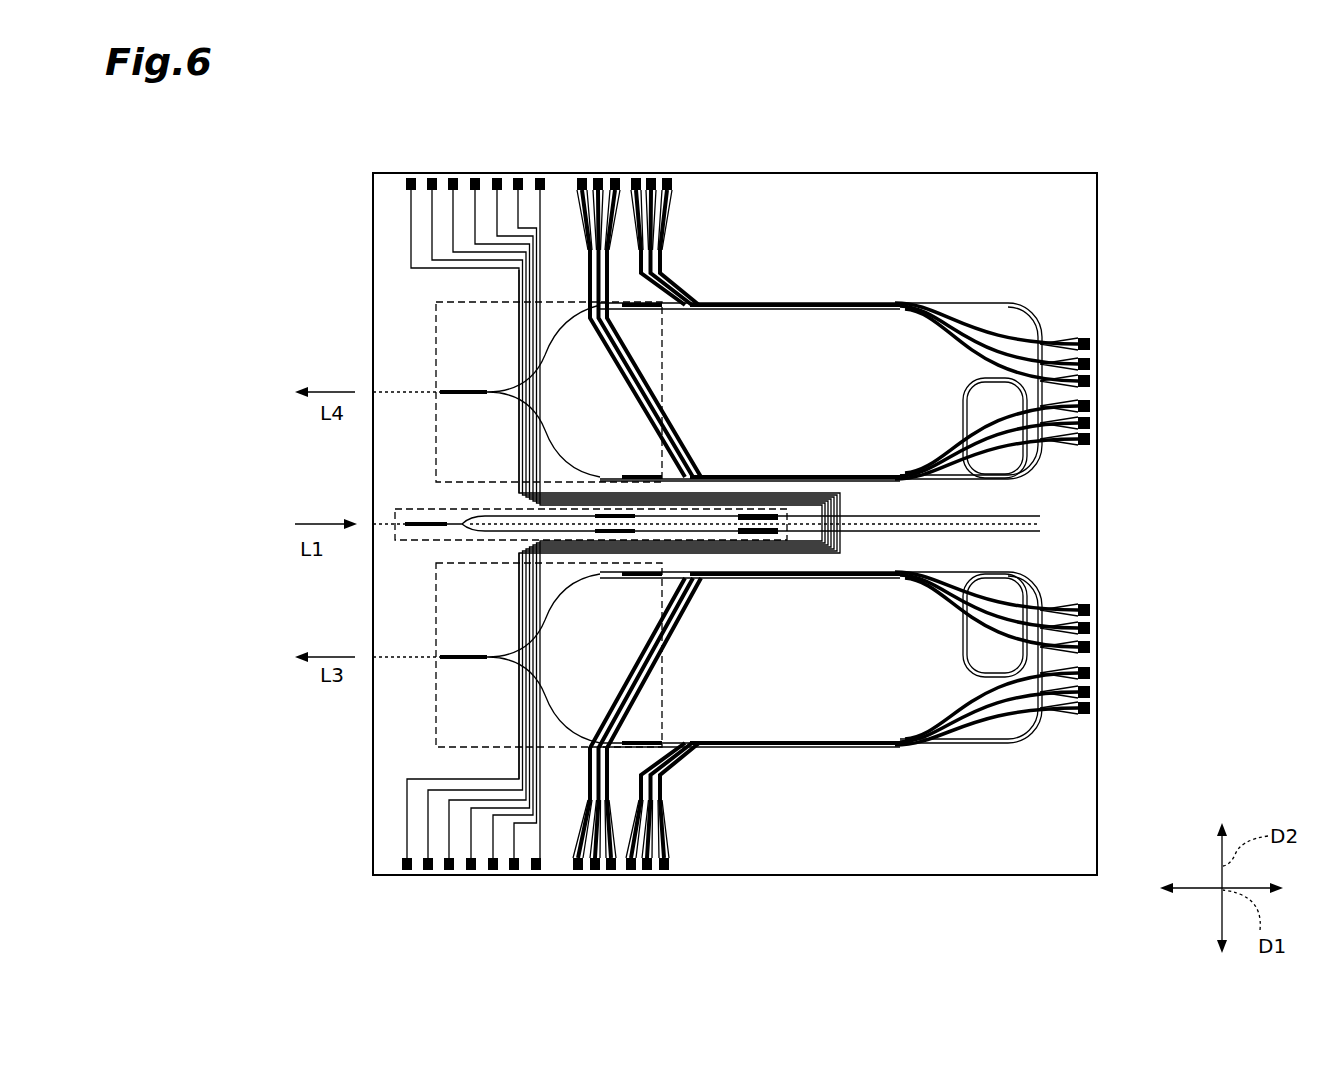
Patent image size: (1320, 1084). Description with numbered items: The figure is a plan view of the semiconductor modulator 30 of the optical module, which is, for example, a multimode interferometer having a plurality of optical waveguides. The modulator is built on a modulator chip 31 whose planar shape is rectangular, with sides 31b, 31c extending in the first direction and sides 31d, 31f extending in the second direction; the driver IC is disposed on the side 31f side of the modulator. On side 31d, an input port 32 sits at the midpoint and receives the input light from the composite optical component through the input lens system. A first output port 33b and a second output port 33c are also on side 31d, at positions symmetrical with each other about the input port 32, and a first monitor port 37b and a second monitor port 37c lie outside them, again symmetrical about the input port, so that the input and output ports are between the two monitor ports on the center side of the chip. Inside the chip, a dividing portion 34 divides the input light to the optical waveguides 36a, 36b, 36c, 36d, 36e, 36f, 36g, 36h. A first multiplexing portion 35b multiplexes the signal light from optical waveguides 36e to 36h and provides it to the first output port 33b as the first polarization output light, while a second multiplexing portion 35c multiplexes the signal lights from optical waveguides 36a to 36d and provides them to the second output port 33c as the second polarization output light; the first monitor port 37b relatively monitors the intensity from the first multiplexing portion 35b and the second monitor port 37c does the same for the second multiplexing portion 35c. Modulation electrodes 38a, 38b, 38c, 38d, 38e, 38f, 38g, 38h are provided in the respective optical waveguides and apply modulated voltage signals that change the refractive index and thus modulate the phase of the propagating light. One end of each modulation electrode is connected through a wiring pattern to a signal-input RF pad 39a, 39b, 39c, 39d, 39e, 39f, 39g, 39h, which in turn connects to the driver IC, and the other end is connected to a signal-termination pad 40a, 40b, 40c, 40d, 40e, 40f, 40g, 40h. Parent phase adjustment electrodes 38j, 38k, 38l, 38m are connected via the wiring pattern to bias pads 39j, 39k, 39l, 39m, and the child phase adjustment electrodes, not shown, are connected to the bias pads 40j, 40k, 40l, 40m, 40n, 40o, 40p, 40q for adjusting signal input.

The modulator 30 is at (996, 140).
The modulator chip 31 is at (846, 170).
The side 31b is at (763, 172).
The side 31c is at (750, 877).
The side 31d is at (372, 826).
The side 31f is at (1098, 826).
The input port 32 is at (373, 522).
The first output port 33b is at (373, 390).
The second output port 33c is at (373, 655).
The dividing portion 34 is at (410, 507).
The first multiplexing portion 35b is at (556, 300).
The second multiplexing portion 35c is at (556, 748).
The optical waveguide 36a is at (958, 748).
The optical waveguide 36b is at (1045, 735).
The optical waveguide 36c is at (963, 645).
The optical waveguide 36d is at (950, 578).
The optical waveguide 36e is at (1045, 470).
The optical waveguide 36f is at (1003, 480).
The optical waveguide 36g is at (963, 400).
The optical waveguide 36h is at (935, 483).
The first monitor port 37b is at (436, 392).
The second monitor port 37c is at (436, 657).
The modulation electrode 38a is at (832, 302).
The modulation electrode 38b is at (808, 311).
The modulation electrode 38c is at (795, 474).
The modulation electrode 38d is at (850, 483).
The modulation electrode 38e is at (850, 572).
The modulation electrode 38f is at (830, 580).
The modulation electrode 38g is at (822, 740).
The modulation electrode 38h is at (805, 749).
The parent phase adjustment electrode 38j is at (707, 514).
The parent phase adjustment electrode 38k is at (720, 522).
The parent phase adjustment electrode 38l is at (715, 533).
The parent phase adjustment electrode 38m is at (740, 535).
The RF pad 39a is at (1092, 344).
The RF pad 39b is at (1092, 381).
The RF pad 39c is at (1092, 406).
The RF pad 39d is at (1092, 439).
The RF pad 39e is at (1092, 610).
The RF pad 39f is at (1092, 647).
The RF pad 39g is at (1092, 673).
The RF pad 39h is at (1092, 708).
The bias pad 39j is at (432, 176).
The bias pad 39k is at (453, 176).
The bias pad 39l is at (423, 872).
The bias pad 39m is at (448, 872).
The signal pad 40a is at (667, 176).
The signal pad 40b is at (636, 176).
The signal pad 40c is at (615, 176).
The signal pad 40d is at (582, 176).
The signal pad 40e is at (667, 872).
The signal pad 40f is at (633, 872).
The signal pad 40g is at (613, 872).
The signal pad 40h is at (580, 872).
The bias pad 40j is at (475, 176).
The bias pad 40k is at (497, 176).
The bias pad 40l is at (518, 176).
The bias pad 40m is at (540, 176).
The bias pad 40n is at (470, 872).
The bias pad 40o is at (492, 872).
The bias pad 40p is at (515, 872).
The bias pad 40q is at (538, 872).